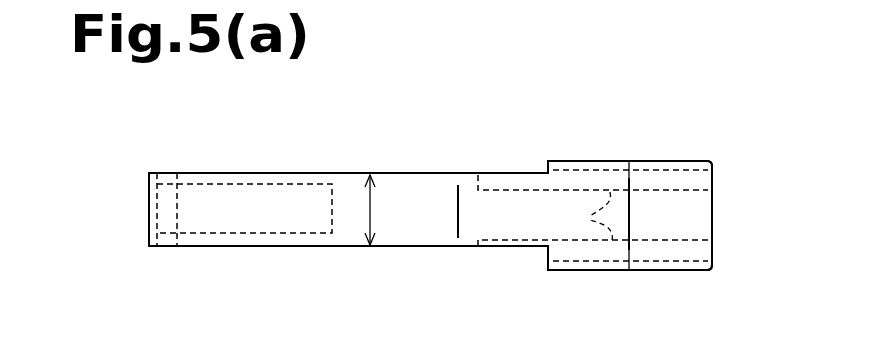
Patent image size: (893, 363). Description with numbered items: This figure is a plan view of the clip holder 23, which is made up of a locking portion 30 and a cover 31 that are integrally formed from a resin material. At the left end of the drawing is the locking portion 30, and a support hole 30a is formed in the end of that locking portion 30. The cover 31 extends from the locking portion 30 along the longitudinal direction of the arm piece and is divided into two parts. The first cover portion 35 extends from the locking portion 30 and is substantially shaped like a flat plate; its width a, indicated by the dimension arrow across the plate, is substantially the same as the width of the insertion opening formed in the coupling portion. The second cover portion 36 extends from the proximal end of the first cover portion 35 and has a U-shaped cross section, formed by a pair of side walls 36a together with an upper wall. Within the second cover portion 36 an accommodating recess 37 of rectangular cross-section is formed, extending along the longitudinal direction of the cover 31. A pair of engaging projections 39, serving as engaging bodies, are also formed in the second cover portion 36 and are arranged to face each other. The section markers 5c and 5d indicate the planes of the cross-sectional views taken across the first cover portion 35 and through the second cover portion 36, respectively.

The first cover portion 35 is at (245, 173).
The locking portion 30 is at (263, 233).
The support hole 30a is at (177, 233).
The width of the first cover portion a is at (362, 210).
The cover 31 is at (502, 246).
The second cover portion 36 is at (568, 162).
The side walls 36a is at (643, 161).
The clip holder 23 is at (693, 161).
The accommodating recess 37 is at (687, 192).
The engaging projections 39 is at (613, 192).
The section line 5c is at (142, 207).
The section line 5d is at (628, 143).